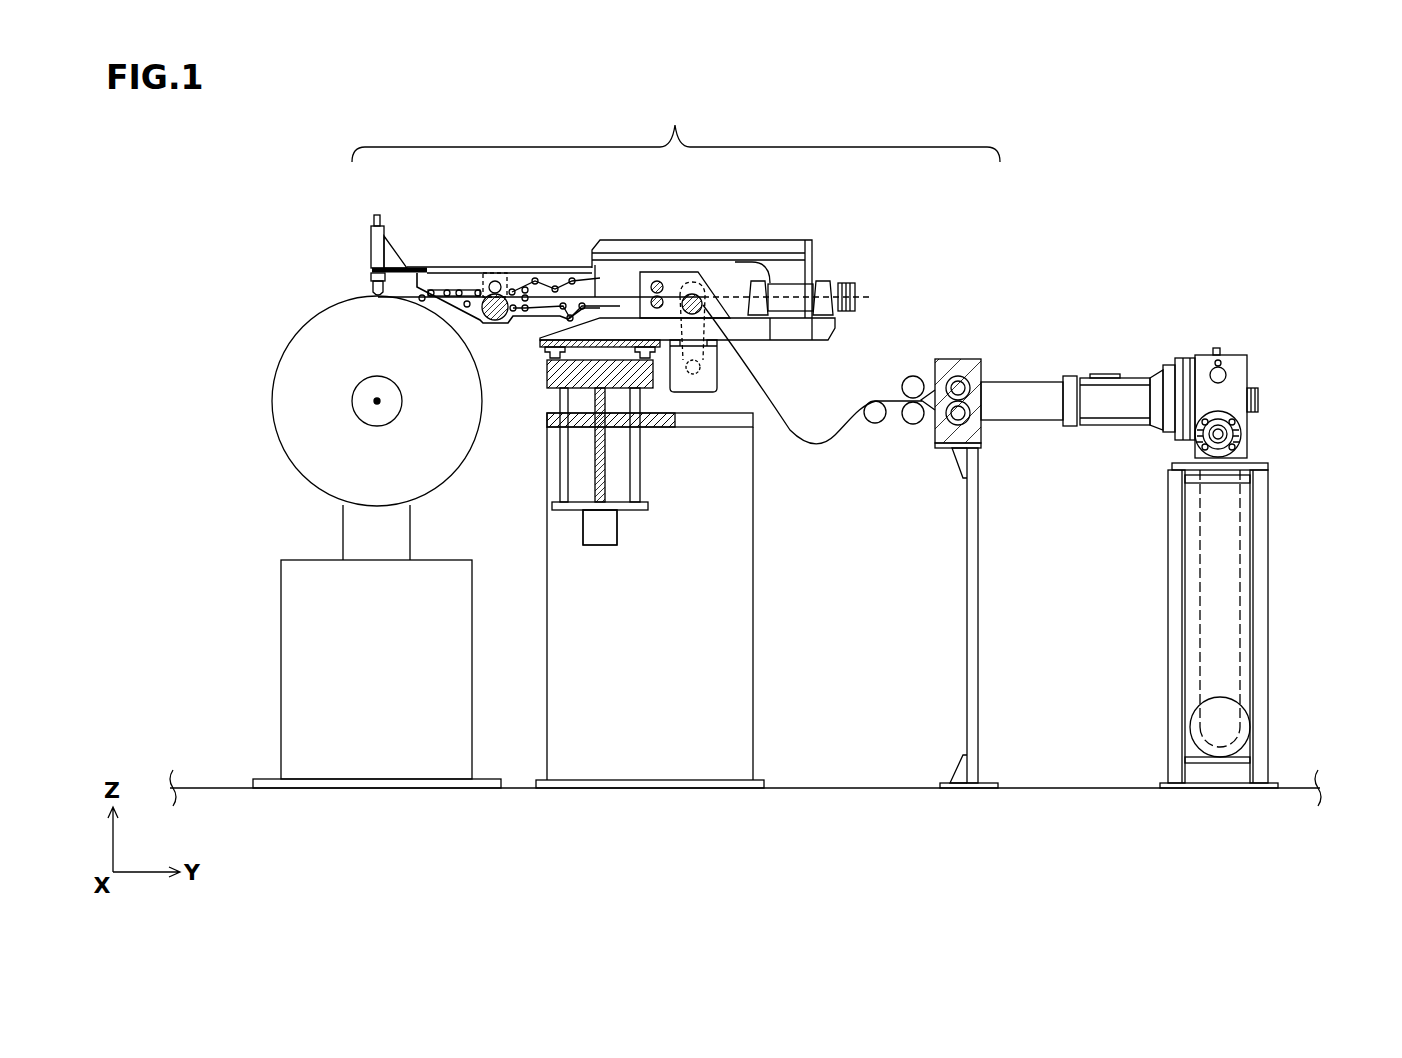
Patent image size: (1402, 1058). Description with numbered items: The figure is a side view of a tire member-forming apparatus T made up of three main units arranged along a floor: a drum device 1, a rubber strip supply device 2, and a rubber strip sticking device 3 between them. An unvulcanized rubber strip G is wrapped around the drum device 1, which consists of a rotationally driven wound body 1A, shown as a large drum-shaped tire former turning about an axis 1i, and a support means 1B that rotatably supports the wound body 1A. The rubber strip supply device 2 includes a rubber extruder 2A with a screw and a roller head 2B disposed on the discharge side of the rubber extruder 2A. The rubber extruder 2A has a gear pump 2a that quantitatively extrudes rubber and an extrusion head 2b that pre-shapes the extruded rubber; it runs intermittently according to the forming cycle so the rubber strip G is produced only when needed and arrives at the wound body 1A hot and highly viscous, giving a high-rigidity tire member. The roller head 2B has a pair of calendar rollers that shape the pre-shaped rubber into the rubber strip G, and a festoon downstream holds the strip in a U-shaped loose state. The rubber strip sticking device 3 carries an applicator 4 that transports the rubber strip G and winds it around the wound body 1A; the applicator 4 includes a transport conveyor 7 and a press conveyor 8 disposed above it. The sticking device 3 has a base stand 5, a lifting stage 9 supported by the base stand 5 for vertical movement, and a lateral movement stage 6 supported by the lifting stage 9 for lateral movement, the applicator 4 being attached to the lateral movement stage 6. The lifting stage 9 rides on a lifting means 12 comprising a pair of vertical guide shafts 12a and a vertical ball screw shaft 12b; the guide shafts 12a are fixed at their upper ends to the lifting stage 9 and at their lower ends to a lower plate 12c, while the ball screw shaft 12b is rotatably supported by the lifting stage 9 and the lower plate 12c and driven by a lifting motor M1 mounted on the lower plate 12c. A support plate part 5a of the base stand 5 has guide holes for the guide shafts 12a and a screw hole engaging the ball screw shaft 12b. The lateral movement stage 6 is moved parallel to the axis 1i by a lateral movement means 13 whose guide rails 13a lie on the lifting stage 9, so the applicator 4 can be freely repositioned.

The tire member-forming apparatus T is at (676, 129).
The drum device 1 is at (328, 289).
The wound body 1A is at (272, 375).
The support means 1B is at (283, 632).
The axis 1i is at (376, 401).
The rubber strip supply device 2 is at (915, 207).
The rubber extruder 2A is at (1070, 249).
The roller head 2B is at (899, 340).
The gear pump 2a is at (967, 347).
The extrusion head 2b is at (928, 345).
The rubber strip sticking device 3 is at (797, 212).
The applicator 4 is at (850, 246).
The base stand 5 is at (657, 745).
The support plate part 5a is at (710, 417).
The lateral movement stage 6 is at (583, 377).
The transport conveyor 7 is at (540, 306).
The press conveyor 8 is at (523, 281).
The lifting stage 9 is at (583, 318).
The lifting means 12 is at (519, 523).
The guide shafts 12a is at (563, 453).
The ball screw shaft 12b is at (595, 467).
The lower plate 12c is at (600, 535).
The lateral movement means 13 is at (695, 360).
The guide rails 13a is at (669, 352).
The rubber strip G is at (818, 455).
The lifting motor M1 is at (597, 540).